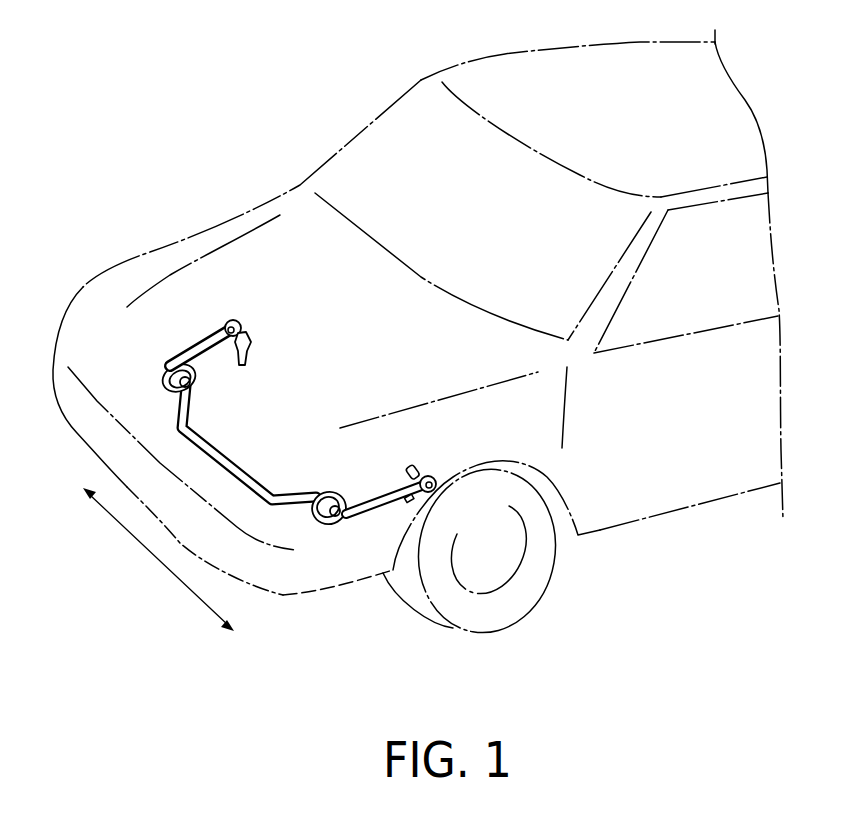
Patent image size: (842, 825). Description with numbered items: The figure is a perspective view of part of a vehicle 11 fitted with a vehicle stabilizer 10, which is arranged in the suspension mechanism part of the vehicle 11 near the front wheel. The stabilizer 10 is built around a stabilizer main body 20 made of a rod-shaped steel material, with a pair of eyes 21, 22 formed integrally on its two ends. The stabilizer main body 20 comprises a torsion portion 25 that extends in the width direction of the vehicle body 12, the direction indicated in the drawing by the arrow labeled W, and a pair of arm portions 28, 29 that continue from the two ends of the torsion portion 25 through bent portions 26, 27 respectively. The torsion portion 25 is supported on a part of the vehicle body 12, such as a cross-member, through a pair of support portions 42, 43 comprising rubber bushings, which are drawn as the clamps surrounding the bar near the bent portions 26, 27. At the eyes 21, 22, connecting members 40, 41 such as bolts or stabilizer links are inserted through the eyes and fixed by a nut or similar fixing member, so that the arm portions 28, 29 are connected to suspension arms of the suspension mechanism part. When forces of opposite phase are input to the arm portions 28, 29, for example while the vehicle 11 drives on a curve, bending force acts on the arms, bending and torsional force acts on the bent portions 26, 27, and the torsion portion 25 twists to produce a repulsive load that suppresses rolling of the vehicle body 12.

The vehicle stabilizer 10 is at (254, 446).
The vehicle 11 is at (190, 155).
The vehicle body 12 is at (603, 542).
The stabilizer main body 20 is at (233, 486).
The eye 21 is at (233, 319).
The eye 22 is at (430, 474).
The torsion portion 25 is at (243, 467).
The bent portion 26 is at (192, 358).
The bent portion 27 is at (337, 511).
The arm portion 28 is at (245, 303).
The arm portion 29 is at (412, 433).
The connecting member 40 is at (246, 327).
The connecting member 41 is at (412, 465).
The support portion 42 is at (193, 370).
The support portion 43 is at (337, 500).
The vehicle width direction W is at (153, 558).